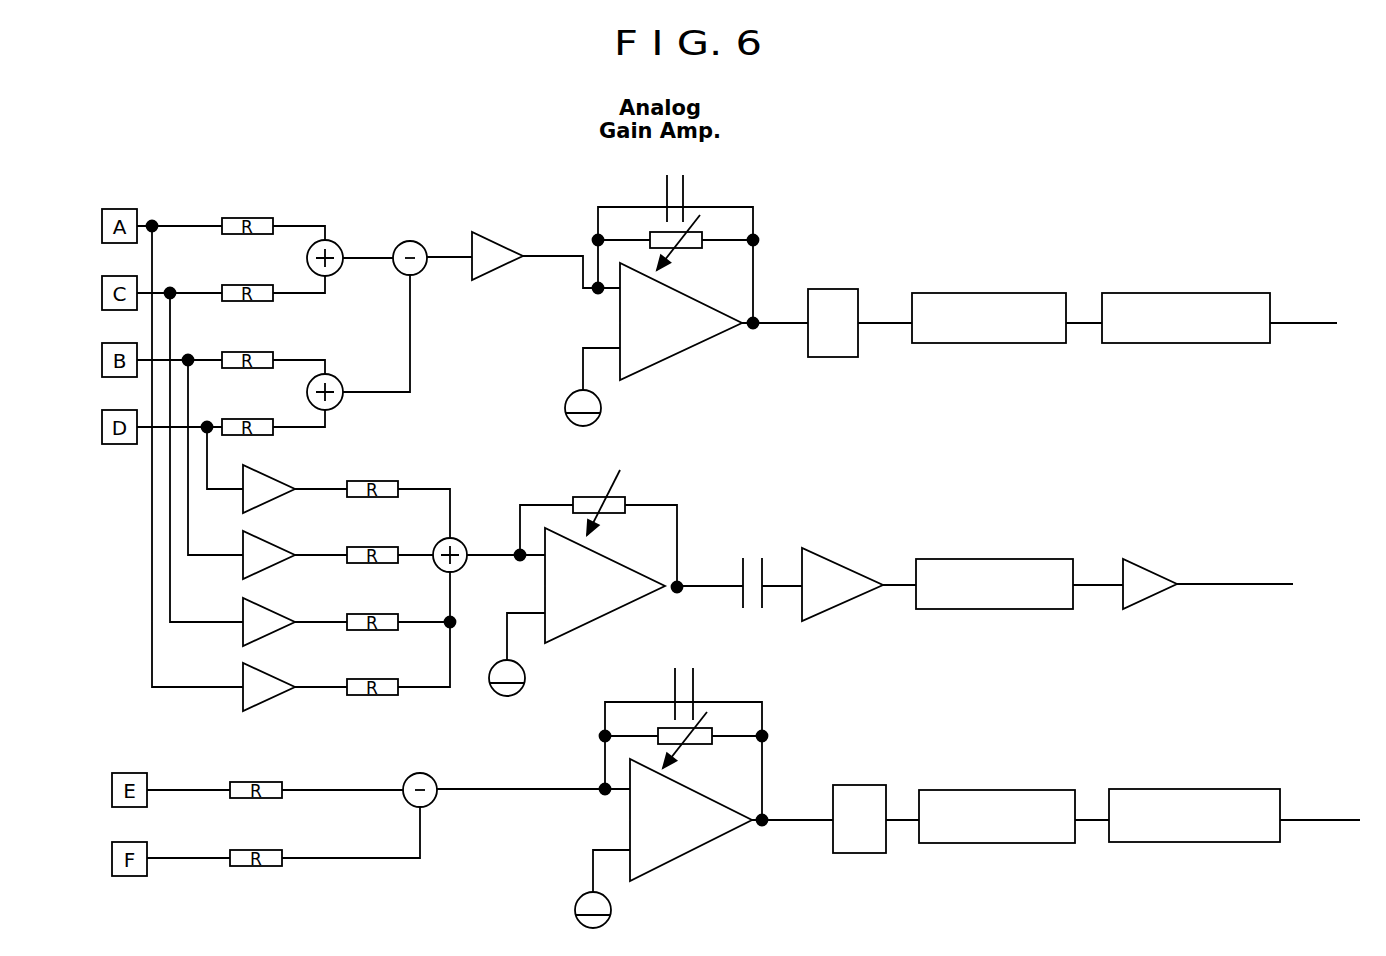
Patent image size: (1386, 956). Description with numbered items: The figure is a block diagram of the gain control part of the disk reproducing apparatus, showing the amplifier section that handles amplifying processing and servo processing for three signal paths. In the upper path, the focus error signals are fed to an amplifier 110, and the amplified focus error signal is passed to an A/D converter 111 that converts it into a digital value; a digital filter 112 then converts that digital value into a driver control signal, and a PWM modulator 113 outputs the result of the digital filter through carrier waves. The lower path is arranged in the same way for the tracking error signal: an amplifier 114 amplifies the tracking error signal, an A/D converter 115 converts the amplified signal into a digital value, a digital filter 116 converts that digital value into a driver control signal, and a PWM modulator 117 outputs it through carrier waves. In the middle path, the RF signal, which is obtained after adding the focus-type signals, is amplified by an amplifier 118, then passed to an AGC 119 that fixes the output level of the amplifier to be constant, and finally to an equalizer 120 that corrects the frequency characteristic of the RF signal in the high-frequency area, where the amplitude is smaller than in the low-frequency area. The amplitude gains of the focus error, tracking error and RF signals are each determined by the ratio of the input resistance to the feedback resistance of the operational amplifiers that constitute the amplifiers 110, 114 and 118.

The amplifier of the focus error signals 110 is at (698, 308).
The A/D converter 111 is at (845, 288).
The digital filter 112 is at (987, 292).
The PWM modulator 113 is at (1187, 292).
The amplifier of the tracking error signal 114 is at (688, 818).
The A/D converter 115 is at (872, 782).
The digital filter 116 is at (997, 790).
The PWM modulator 117 is at (1183, 797).
The amplifier of the RF signal 118 is at (612, 568).
The AGC 119 is at (832, 567).
The equalizer 120 is at (975, 567).